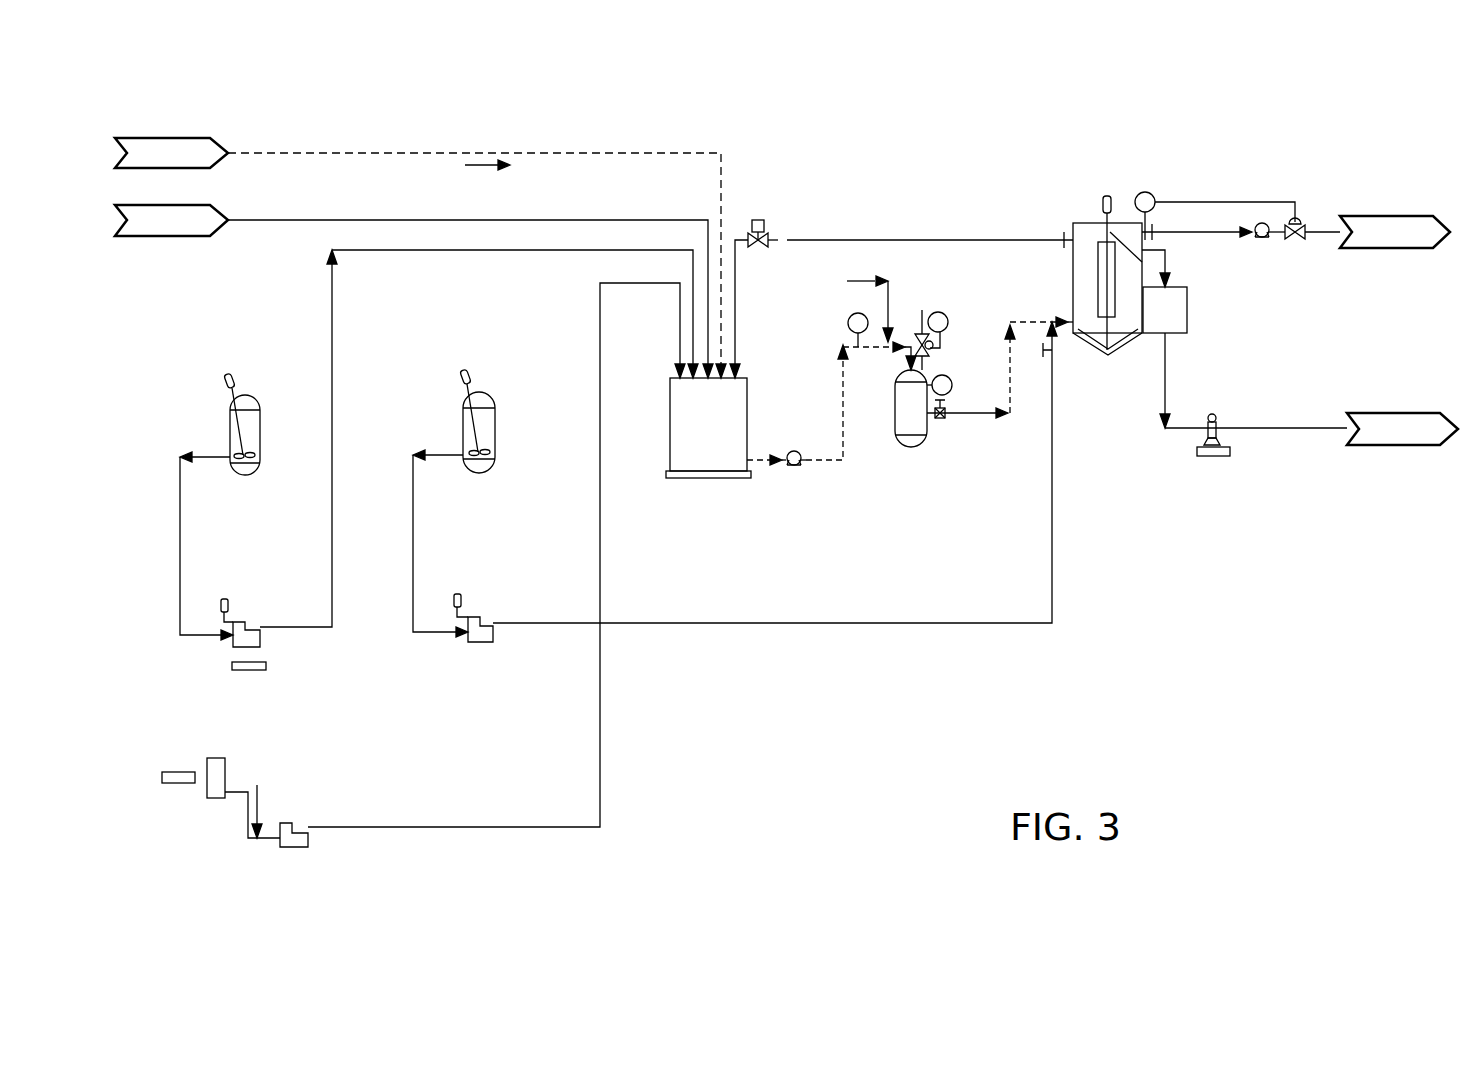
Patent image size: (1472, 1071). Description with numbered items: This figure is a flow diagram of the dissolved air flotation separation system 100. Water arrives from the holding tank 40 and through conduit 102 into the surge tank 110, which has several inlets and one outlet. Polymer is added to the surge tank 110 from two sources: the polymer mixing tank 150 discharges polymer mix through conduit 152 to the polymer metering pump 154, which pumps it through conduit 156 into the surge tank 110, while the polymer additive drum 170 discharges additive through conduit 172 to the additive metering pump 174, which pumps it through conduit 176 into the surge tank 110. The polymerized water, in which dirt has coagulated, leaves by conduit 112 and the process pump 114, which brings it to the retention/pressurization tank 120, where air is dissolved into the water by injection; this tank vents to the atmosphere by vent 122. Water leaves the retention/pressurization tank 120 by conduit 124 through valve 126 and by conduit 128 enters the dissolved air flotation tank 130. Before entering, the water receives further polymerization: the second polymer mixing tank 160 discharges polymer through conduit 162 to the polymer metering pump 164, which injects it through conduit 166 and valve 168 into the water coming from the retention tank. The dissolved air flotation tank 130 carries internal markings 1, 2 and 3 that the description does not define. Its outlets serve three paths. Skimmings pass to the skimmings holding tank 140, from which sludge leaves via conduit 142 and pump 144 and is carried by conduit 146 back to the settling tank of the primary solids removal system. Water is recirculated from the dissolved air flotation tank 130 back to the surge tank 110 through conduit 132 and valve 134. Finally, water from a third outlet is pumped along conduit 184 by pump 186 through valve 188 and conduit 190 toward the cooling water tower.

The holding tank 40 is at (188, 140).
The conduit 102 is at (403, 218).
The surge tank 110 is at (695, 446).
The conduit 112 is at (763, 465).
The process pump 114 is at (790, 452).
The retention/pressurization tank 120 is at (895, 425).
The vent 122 is at (948, 320).
The conduit 124 is at (950, 380).
The valve 126 is at (947, 408).
The conduit 128 is at (1010, 413).
The dissolved air flotation tank 130 is at (1097, 338).
The conduit 132 is at (1020, 238).
The valve 134 is at (760, 226).
The skimmings holding tank 140 is at (1164, 291).
The conduit 142 is at (1168, 388).
The pump 144 is at (1218, 422).
The conduit 146 is at (1322, 428).
The polymer mixing tank 150 is at (262, 452).
The conduit 152 is at (180, 552).
The polymer metering pump 154 is at (262, 640).
The conduit 156 is at (332, 532).
The second polymer mixing tank 160 is at (497, 420).
The conduit 162 is at (413, 552).
The polymer metering pump 164 is at (495, 636).
The conduit 166 is at (770, 622).
The valve 168 is at (1040, 346).
The polymer additive drum 170 is at (207, 765).
The conduit 172 is at (248, 840).
The additive metering pump 174 is at (310, 843).
The conduit 176 is at (480, 830).
The conduit 184 is at (1185, 232).
The pump 186 is at (1263, 223).
The valve 188 is at (1305, 238).
The conduit 190 is at (1318, 230).
The separation system 100 is at (1182, 531).
The zone 1 is at (1135, 264).
The zone 2 is at (1082, 244).
The gauge 3 is at (1133, 250).